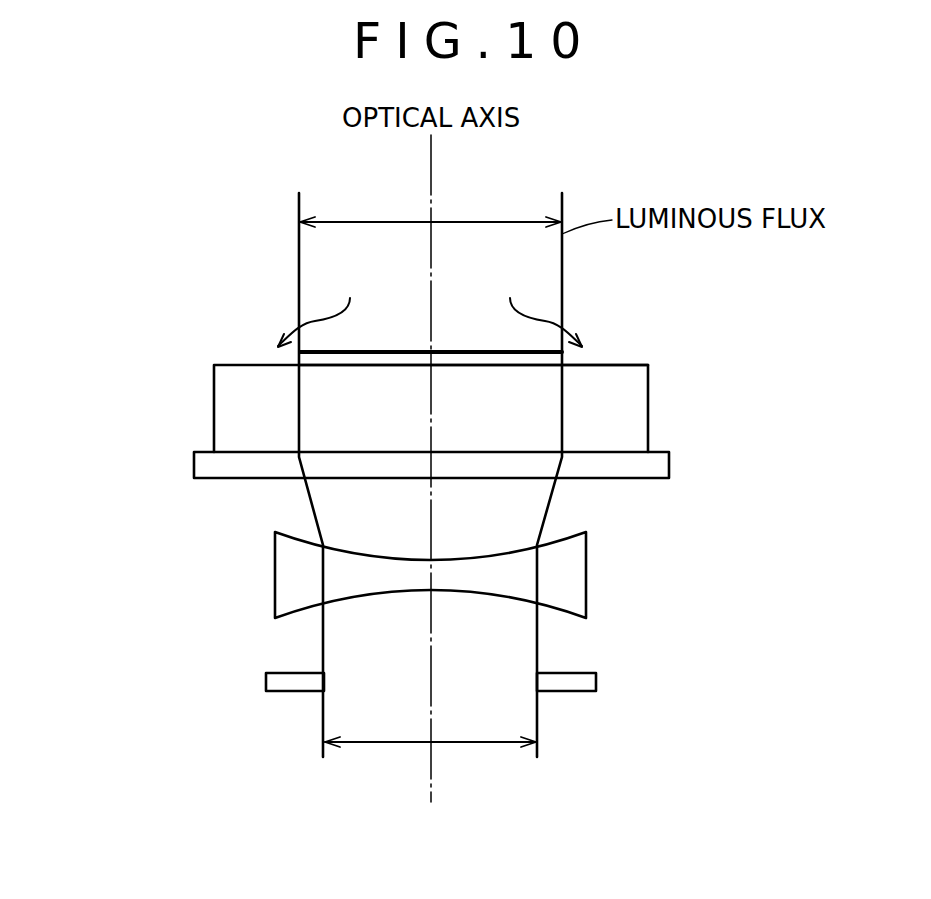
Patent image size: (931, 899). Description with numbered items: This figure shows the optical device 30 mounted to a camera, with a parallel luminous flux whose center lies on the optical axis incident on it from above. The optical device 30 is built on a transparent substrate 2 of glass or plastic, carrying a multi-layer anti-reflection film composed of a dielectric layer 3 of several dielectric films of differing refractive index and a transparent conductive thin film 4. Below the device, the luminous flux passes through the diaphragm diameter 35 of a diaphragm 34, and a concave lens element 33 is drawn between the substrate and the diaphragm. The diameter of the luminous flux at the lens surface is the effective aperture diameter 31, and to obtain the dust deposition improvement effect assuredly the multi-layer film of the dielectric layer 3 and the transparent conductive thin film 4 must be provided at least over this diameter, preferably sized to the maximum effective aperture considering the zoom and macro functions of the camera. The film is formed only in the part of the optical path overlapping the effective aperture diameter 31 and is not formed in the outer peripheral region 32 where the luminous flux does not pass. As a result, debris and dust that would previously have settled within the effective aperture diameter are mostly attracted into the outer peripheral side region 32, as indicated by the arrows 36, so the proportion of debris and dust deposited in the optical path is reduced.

The optical device 30 is at (137, 346).
The effective aperture diameter 31 is at (485, 220).
The transparent substrate 2 is at (670, 466).
The dielectric layer 3 is at (650, 418).
The transparent conductive thin film 4 is at (565, 360).
The region where the luminous flux does not pass 32 is at (612, 364).
The concave lens 33 is at (588, 575).
The diaphragm 34 is at (598, 682).
The diaphragm diameter 35 is at (488, 744).
The arrows 36 is at (315, 322).